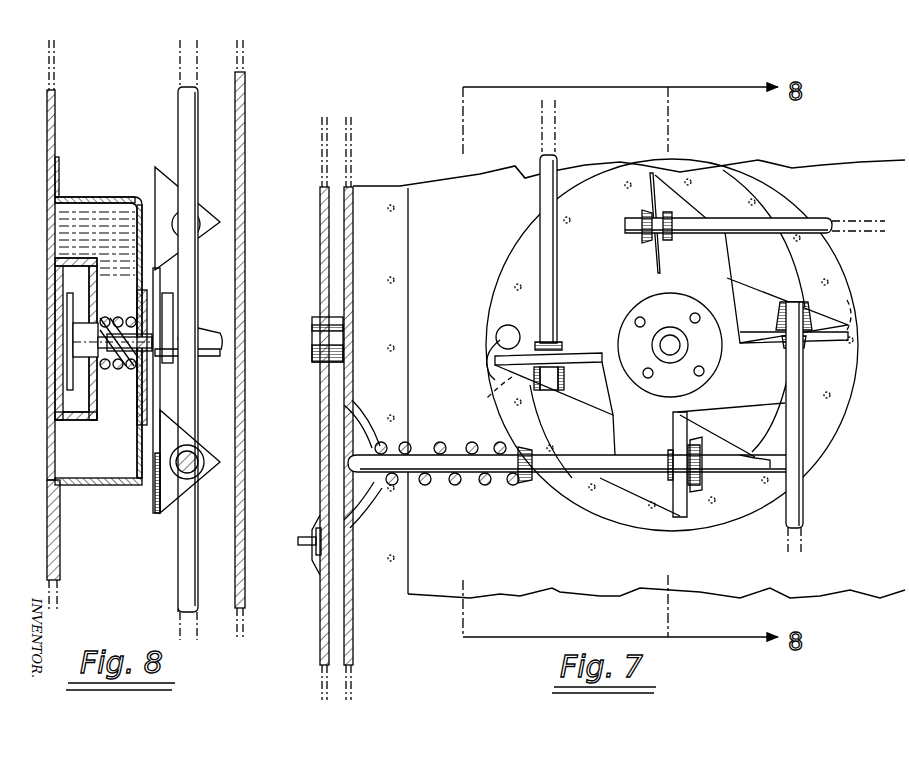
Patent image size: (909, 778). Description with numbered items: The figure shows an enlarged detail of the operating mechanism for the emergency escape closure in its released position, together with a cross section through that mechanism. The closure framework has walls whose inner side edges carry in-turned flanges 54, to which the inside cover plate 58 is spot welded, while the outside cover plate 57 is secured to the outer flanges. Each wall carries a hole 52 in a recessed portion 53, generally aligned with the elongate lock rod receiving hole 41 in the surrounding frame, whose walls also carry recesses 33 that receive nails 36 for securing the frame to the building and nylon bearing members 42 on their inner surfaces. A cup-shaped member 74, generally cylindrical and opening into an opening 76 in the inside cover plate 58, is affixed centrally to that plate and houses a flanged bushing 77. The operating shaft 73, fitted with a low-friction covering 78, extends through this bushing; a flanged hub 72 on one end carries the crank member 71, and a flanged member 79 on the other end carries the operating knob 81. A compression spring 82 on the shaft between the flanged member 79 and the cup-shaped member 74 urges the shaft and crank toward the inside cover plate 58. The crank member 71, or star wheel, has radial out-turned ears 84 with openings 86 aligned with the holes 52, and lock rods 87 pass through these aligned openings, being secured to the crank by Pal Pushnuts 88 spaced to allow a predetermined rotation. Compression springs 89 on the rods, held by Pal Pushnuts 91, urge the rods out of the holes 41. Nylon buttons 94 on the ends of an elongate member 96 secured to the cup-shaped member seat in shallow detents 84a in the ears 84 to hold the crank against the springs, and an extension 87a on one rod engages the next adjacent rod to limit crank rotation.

In FIG. 7, the recess 33 is at (318, 526).
In FIG. 7, the nail 36 is at (304, 545).
In FIG. 7, the lock rod receiving hole 41 is at (320, 468).
In FIG. 7, the bearing member 42 is at (343, 343).
In FIG. 7, the hole 52 is at (369, 448).
In FIG. 7, the recessed portion 53 is at (374, 488).
In FIG. 7, the in-turned flange 54 is at (408, 565).
In FIG. 8, the outside cover plate 57 is at (236, 550).
In FIG. 8, the inside cover plate 58 is at (47, 172).
In FIG. 8, the crank member 71 is at (158, 497).
In FIG. 8, the flanged hub 72 is at (173, 304).
In FIG. 7, the flanged hub 72 is at (640, 328).
In FIG. 8, the operating shaft 73 is at (118, 355).
In FIG. 7, the operating shaft 73 is at (670, 338).
In FIG. 8, the cup-shaped member 74 is at (79, 197).
In FIG. 8, the opening 76 is at (56, 481).
In FIG. 8, the flanged bushing 77 is at (140, 380).
In FIG. 8, the covering 78 is at (118, 334).
In FIG. 8, the flanged member 79 is at (73, 338).
In FIG. 8, the operating knob 81 is at (62, 286).
In FIG. 8, the compression spring 82 is at (67, 372).
In FIG. 8, the out-turned ear 84 is at (200, 228).
In FIG. 7, the out-turned ear 84 is at (655, 260).
In FIG. 7, the detent 84a is at (500, 395).
In FIG. 7, the opening 86 is at (785, 347).
In FIG. 8, the lock rod 87 is at (184, 144).
In FIG. 7, the lock rod 87 is at (548, 282).
In FIG. 7, the extension 87a is at (748, 465).
In FIG. 7, the Pal Pushnut 88 is at (696, 452).
In FIG. 7, the compression spring 89 is at (478, 452).
In FIG. 7, the Pal Pushnut 91 is at (527, 480).
In FIG. 7, the button 94 is at (500, 340).
In FIG. 7, the elongate member 96 is at (496, 345).